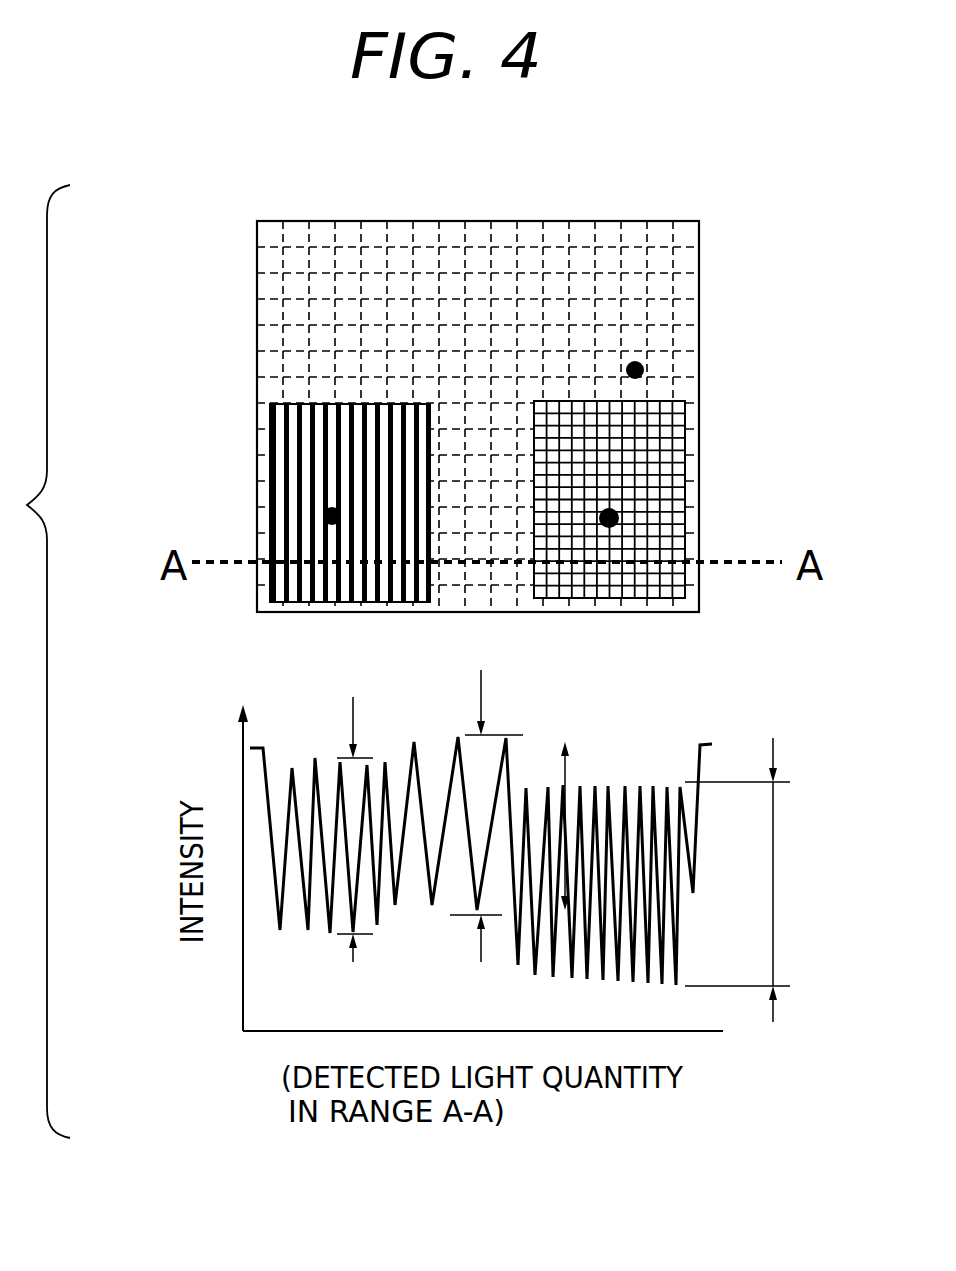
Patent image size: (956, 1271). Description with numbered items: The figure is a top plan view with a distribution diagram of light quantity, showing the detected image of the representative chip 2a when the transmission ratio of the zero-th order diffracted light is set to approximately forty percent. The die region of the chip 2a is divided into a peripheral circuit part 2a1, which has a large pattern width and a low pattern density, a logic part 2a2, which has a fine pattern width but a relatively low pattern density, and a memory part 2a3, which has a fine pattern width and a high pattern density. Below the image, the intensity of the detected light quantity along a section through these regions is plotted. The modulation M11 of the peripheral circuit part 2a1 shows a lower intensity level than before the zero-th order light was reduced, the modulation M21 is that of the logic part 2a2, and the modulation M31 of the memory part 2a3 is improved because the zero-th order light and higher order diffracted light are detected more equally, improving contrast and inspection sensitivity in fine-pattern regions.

The representative chip 2a is at (257, 285).
The peripheral circuit part 2a1 is at (643, 363).
The logic part 2a2 is at (330, 516).
The memory part 2a3 is at (615, 512).
The modulation of the peripheral circuit part M11 is at (496, 816).
The modulation of the logic part M21 is at (335, 829).
The modulation of the memory part M31 is at (761, 880).